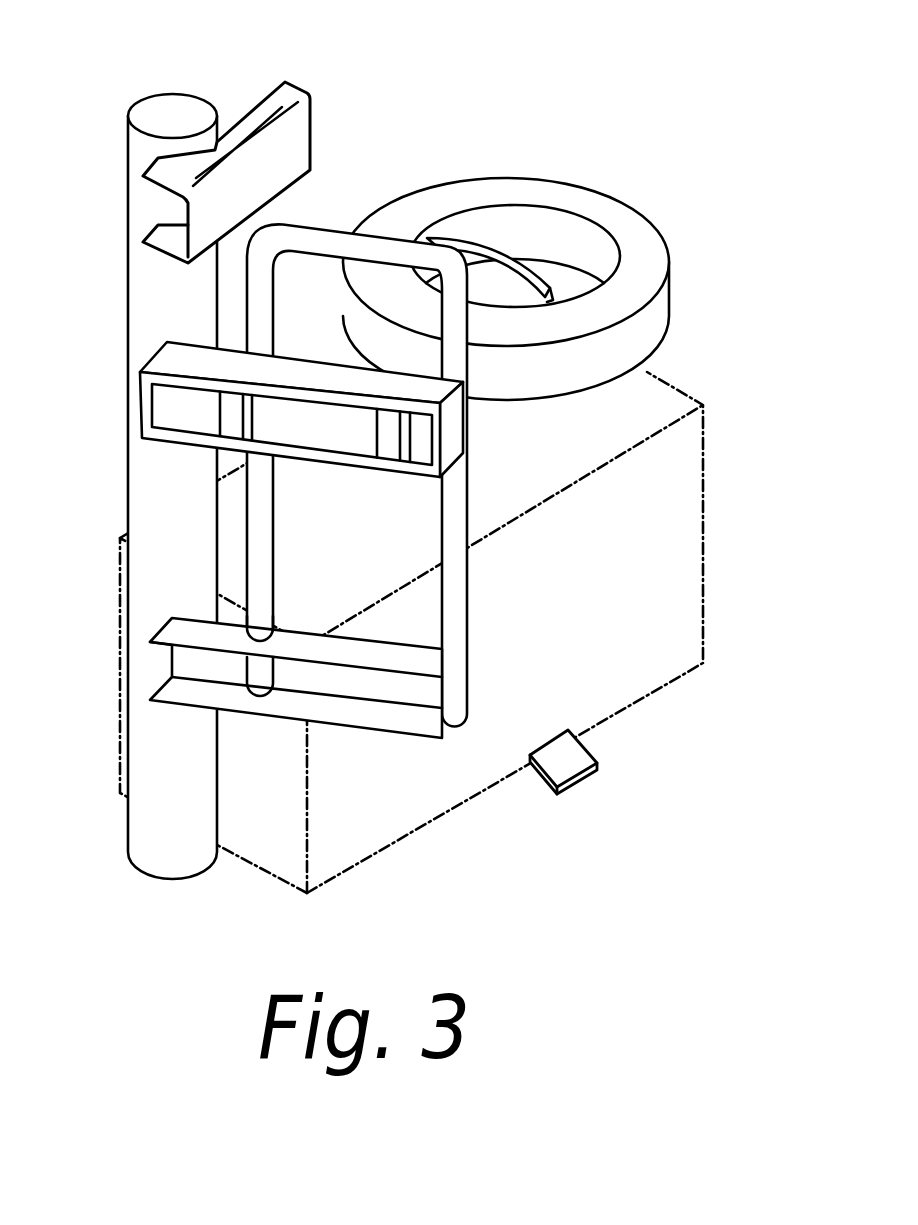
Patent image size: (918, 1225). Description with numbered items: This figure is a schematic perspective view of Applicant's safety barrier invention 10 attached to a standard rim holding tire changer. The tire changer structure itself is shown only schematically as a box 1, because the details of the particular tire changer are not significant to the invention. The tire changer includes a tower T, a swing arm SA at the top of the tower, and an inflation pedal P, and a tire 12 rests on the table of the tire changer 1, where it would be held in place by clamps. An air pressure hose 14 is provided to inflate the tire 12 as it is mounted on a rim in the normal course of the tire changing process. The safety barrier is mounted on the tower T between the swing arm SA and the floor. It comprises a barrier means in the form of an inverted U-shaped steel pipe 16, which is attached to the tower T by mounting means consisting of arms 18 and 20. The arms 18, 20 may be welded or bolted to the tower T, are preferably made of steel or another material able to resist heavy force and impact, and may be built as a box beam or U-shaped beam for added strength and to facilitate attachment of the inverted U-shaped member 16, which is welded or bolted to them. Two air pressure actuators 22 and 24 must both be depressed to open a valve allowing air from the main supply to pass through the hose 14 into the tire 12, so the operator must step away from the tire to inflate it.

The box 1 is at (680, 497).
The invention 10 is at (299, 491).
The tire 12 is at (635, 220).
The air pressure hose 14 is at (473, 240).
The inverted U-shaped steel pipe 16 is at (455, 505).
The arm 18 is at (335, 713).
The arm 20 is at (306, 378).
The air pressure actuator 22 is at (389, 452).
The air pressure actuator 24 is at (228, 414).
The tower T is at (137, 483).
The swing arm SA is at (258, 105).
The inflation pedal P is at (578, 737).